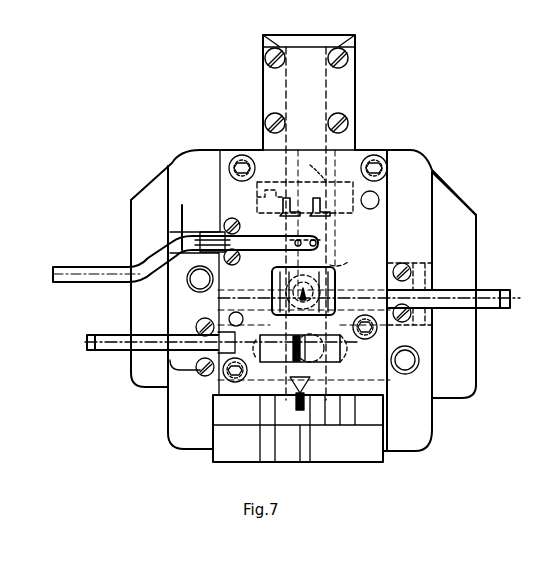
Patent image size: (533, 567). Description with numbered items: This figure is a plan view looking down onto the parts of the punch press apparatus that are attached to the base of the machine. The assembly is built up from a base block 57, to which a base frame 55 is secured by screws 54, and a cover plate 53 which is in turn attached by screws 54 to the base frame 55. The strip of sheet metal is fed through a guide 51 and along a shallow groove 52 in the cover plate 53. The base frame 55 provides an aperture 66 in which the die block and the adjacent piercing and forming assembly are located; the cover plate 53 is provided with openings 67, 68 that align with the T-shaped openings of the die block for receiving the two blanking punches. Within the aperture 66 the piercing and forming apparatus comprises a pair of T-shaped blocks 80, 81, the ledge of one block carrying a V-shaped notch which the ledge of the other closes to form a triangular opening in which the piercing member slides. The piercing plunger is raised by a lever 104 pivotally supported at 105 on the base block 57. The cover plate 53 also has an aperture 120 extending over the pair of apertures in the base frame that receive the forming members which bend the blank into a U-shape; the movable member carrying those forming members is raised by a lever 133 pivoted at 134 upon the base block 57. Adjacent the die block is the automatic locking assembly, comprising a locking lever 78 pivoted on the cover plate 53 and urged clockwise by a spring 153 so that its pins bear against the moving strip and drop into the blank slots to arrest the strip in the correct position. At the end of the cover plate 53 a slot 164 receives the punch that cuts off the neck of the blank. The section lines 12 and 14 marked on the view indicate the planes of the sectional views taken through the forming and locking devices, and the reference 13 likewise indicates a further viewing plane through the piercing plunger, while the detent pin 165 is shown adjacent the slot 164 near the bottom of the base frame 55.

The guide 51 is at (351, 87).
The shallow groove 52 is at (329, 175).
The cover plate 53 is at (256, 152).
The screws 54 is at (374, 160).
The base frame 55 is at (366, 465).
The base block 57 is at (425, 176).
The aperture 66 is at (350, 267).
The opening 67 is at (328, 206).
The opening 68 is at (277, 196).
The locking lever 78 is at (95, 250).
The T-shaped block 80 is at (300, 268).
The T-shaped block 81 is at (277, 320).
The lever 104 is at (495, 291).
The pivot 105 is at (418, 332).
The aperture 120 is at (258, 355).
The lever 133 is at (112, 334).
The pivot 134 is at (165, 380).
The spring 153 is at (180, 214).
The slot 164 is at (292, 400).
The detent pin 165 is at (303, 410).
The bore 13 is at (209, 295).
The section line 12 is at (85, 342).
The section line 14 is at (53, 270).